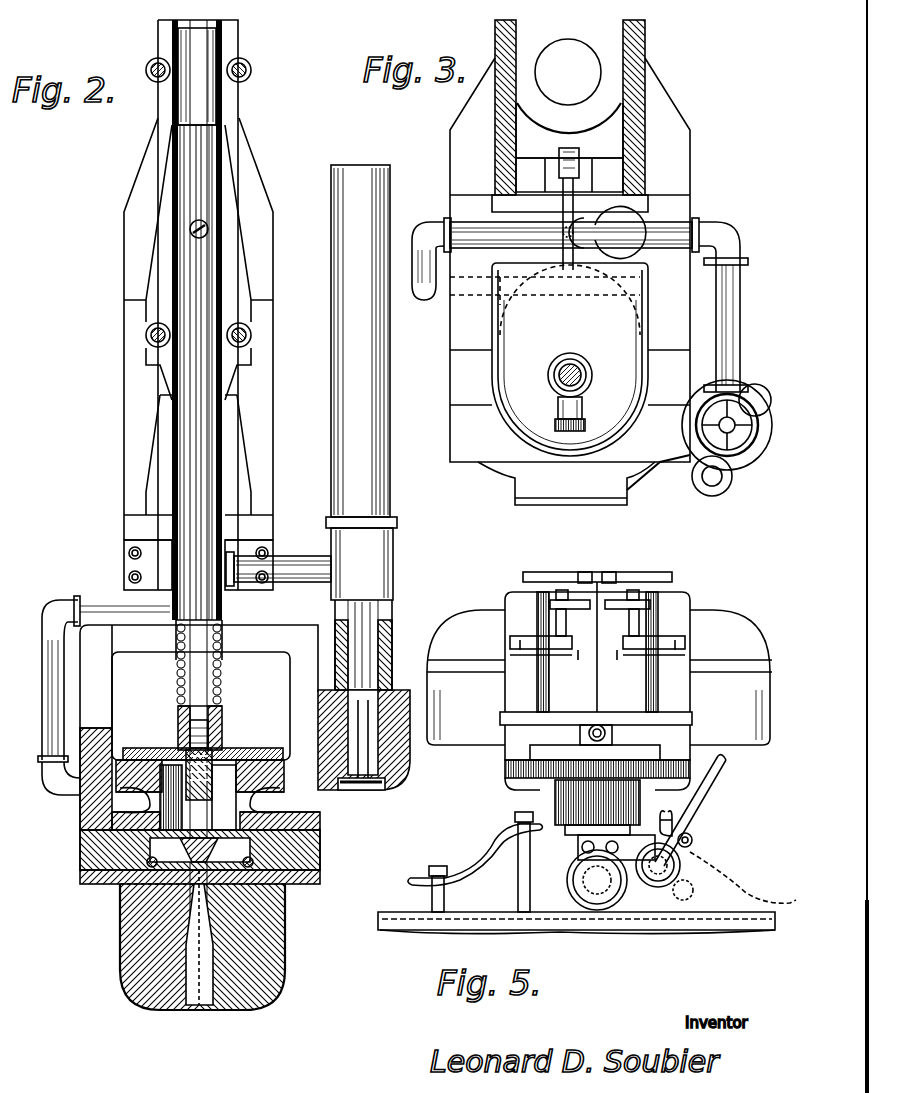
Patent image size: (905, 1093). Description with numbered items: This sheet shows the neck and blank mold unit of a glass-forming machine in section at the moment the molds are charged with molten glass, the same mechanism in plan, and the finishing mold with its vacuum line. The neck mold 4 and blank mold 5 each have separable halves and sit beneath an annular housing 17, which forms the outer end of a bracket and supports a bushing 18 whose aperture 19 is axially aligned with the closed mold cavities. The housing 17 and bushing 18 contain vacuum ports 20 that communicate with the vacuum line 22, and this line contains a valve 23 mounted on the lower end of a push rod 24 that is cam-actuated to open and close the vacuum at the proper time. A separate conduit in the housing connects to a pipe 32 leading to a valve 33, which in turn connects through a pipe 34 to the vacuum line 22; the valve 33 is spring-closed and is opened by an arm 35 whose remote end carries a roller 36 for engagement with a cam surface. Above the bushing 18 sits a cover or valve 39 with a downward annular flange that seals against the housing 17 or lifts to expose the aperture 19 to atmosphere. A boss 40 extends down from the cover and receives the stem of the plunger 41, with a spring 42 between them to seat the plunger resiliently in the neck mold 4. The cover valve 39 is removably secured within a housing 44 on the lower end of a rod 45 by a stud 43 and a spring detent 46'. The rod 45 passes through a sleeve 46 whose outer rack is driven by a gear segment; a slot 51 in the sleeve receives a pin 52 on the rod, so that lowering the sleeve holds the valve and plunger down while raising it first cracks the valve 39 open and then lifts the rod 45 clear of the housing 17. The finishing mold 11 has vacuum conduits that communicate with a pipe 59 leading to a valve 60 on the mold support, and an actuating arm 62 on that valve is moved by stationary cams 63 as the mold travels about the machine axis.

In FIG. 2, the neck mold 4 is at (320, 855).
In FIG. 2, the blank mold 5 is at (280, 930).
In FIG. 5, the finishing mold 11 is at (630, 582).
In FIG. 2, the annular housing 17 is at (96, 745).
In FIG. 2, the bushing 18 is at (140, 770).
In FIG. 2, the aperture 19 is at (285, 892).
In FIG. 2, the vacuum ports 20 is at (320, 832).
In FIG. 2, the vacuum line 22 is at (386, 386).
In FIG. 3, the vacuum line 22 is at (760, 455).
In FIG. 2, the valve 23 is at (352, 790).
In FIG. 2, the push rod 24 is at (368, 668).
In FIG. 3, the push rod 24 is at (722, 432).
In FIG. 2, the pipe 32 is at (46, 705).
In FIG. 3, the pipe 32 is at (424, 295).
In FIG. 3, the valve 33 is at (548, 246).
In FIG. 2, the pipe 34 is at (293, 560).
In FIG. 3, the pipe 34 is at (740, 330).
In FIG. 3, the arm 35 is at (573, 195).
In FIG. 3, the roller 36 is at (557, 150).
In FIG. 2, the cover or valve 39 is at (240, 760).
In FIG. 3, the cover or valve 39 is at (570, 359).
In FIG. 2, the boss 40 is at (190, 795).
In FIG. 2, the plunger 41 is at (110, 830).
In FIG. 2, the spring 42 is at (214, 770).
In FIG. 2, the stud 43 is at (188, 740).
In FIG. 2, the housing 44 is at (222, 726).
In FIG. 2, the rod 45 is at (205, 682).
In FIG. 2, the sleeve 46 is at (206, 320).
In FIG. 3, the spring detent 46' is at (550, 409).
In FIG. 2, the slot 51 is at (205, 287).
In FIG. 2, the pin or roller 52 is at (208, 229).
In FIG. 5, the pipe 59 is at (700, 800).
In FIG. 5, the valve 60 is at (650, 887).
In FIG. 5, the actuating arm 62 is at (692, 845).
In FIG. 5, the stationary cams 63 is at (478, 846).